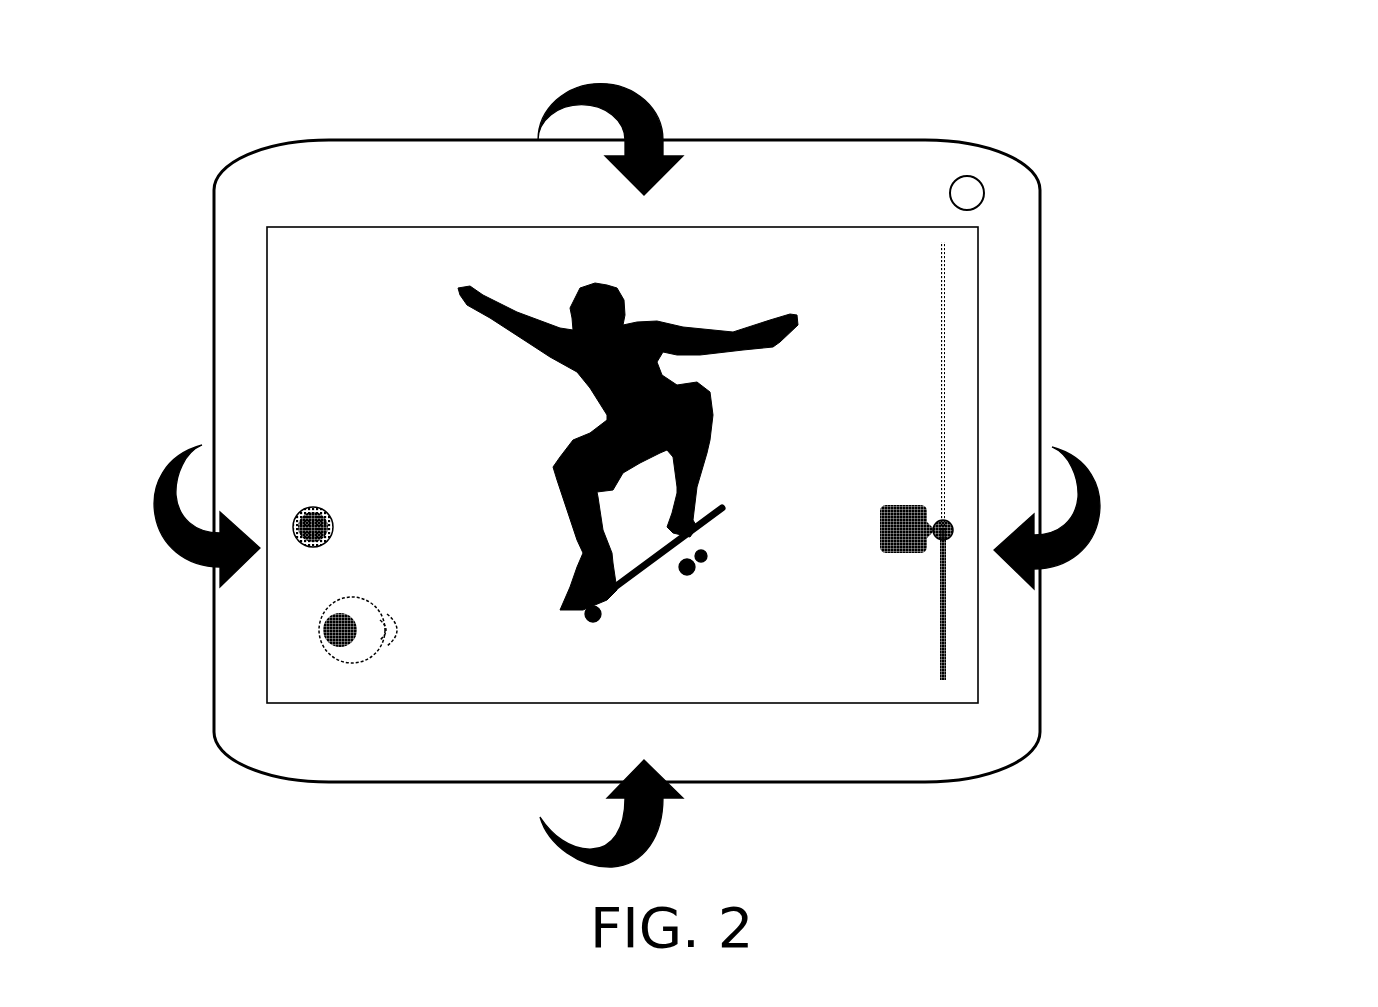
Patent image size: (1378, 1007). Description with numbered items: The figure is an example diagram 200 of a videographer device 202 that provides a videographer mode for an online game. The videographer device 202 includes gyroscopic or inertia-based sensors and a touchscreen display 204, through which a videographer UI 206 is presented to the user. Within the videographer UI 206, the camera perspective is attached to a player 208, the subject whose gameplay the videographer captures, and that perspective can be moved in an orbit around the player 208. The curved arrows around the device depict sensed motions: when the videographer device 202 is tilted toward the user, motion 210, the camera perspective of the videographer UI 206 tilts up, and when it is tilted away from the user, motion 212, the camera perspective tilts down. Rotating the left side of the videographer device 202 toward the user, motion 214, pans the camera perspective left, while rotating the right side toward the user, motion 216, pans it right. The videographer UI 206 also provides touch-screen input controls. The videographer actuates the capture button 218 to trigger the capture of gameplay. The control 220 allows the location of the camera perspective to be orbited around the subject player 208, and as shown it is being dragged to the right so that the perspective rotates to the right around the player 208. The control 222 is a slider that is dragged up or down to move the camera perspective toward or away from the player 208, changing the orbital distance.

The example diagram 200 is at (718, 447).
The videographer device 202 is at (1052, 177).
The touchscreen display 204 is at (262, 225).
The videographer UI 206 is at (611, 531).
The player 208 is at (658, 311).
The motion 210 is at (687, 104).
The motion 212 is at (685, 816).
The motion 214 is at (162, 560).
The motion 216 is at (1082, 438).
The capture button 218 is at (296, 505).
The control 220 is at (316, 665).
The control 222 is at (962, 300).